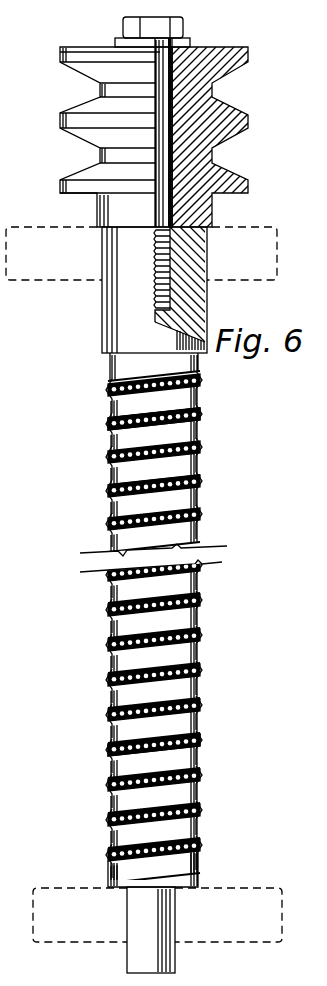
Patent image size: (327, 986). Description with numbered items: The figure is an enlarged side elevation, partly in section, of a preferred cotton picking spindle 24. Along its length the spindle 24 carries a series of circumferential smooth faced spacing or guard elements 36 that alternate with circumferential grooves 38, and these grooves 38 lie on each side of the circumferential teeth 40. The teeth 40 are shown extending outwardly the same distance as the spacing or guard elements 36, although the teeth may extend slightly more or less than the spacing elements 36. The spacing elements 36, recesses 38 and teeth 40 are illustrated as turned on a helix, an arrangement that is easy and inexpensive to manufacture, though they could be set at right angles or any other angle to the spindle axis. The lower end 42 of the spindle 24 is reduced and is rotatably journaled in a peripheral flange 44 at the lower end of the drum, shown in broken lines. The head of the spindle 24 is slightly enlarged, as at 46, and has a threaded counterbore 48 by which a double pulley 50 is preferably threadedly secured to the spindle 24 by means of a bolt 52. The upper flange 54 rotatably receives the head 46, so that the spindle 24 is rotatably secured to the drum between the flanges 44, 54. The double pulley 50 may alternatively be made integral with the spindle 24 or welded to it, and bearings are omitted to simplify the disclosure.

The spindle 24 is at (208, 584).
The spacing or guard elements 36 is at (198, 460).
The circumferential grooves 38 is at (198, 399).
The circumferential teeth 40 is at (113, 424).
The lower ends 42 is at (132, 955).
The peripheral flanges 44 is at (57, 887).
The heads 46 is at (113, 333).
The threaded counterbores 48 is at (174, 285).
The double pulleys 50 is at (243, 48).
The bolts 52 is at (197, 48).
The upper flanges 54 is at (65, 272).